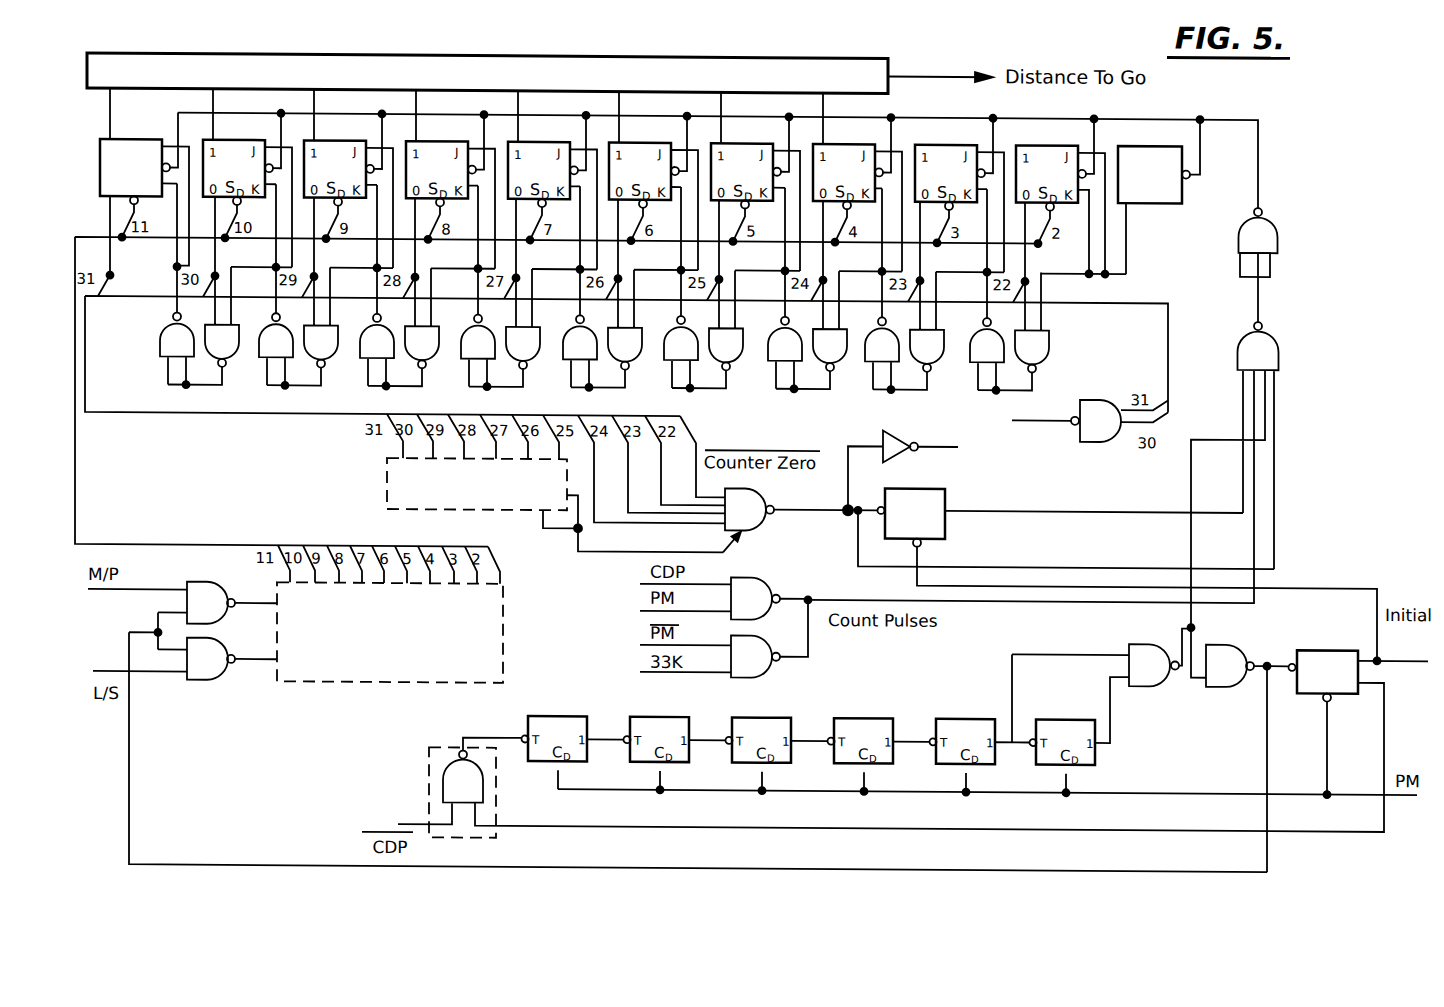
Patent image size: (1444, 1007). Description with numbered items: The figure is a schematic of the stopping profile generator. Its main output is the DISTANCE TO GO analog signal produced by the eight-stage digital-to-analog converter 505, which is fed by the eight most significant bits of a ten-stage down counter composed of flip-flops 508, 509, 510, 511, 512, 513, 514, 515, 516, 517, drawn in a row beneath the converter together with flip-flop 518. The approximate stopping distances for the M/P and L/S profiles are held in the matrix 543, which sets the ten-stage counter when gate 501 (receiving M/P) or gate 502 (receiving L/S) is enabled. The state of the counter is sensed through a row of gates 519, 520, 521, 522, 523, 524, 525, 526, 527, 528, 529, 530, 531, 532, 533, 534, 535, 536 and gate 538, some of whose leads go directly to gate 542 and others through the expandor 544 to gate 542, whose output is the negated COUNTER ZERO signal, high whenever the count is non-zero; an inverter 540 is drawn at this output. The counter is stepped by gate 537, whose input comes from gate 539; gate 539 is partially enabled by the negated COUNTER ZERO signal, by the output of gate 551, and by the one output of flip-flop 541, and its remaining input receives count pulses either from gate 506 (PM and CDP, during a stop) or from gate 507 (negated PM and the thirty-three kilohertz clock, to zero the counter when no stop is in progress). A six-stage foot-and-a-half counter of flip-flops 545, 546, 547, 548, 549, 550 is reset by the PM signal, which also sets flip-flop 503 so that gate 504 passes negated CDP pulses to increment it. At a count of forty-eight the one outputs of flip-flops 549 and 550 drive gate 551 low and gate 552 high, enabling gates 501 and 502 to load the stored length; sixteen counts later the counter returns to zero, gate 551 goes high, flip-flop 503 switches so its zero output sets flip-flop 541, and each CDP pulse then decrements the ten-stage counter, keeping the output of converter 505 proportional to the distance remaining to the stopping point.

The gate 501 is at (182, 602).
The gate 502 is at (185, 658).
The flip-flop 503 is at (1359, 723).
The gate 504 is at (891, 760).
The digital-to-analog converter 505 is at (487, 73).
The gate 506 is at (726, 598).
The gate 507 is at (724, 638).
The flip-flop 508 is at (143, 204).
The flip-flop 509 is at (247, 188).
The flip-flop 510 is at (348, 189).
The flip-flop 511 is at (450, 190).
The flip-flop 512 is at (552, 190).
The flip-flop 513 is at (653, 191).
The flip-flop 514 is at (755, 192).
The flip-flop 515 is at (857, 192).
The flip-flop 516 is at (959, 193).
The flip-flop 517 is at (1062, 196).
The flip-flop 518 is at (1159, 197).
The gate 519 is at (177, 285).
The gate 520 is at (203, 290).
The gate 521 is at (276, 286).
The gate 522 is at (302, 291).
The gate 523 is at (377, 287).
The gate 524 is at (403, 292).
The gate 525 is at (478, 288).
The gate 526 is at (504, 293).
The gate 527 is at (580, 288).
The gate 528 is at (606, 293).
The gate 529 is at (681, 289).
The gate 530 is at (707, 294).
The gate 531 is at (785, 290).
The gate 532 is at (811, 295).
The gate 533 is at (882, 290).
The gate 534 is at (908, 295).
The gate 535 is at (987, 291).
The gate 536 is at (1013, 296).
The gate 537 is at (1258, 265).
The gate 538 is at (1090, 420).
The gate 539 is at (1233, 500).
The inverter 540 is at (893, 434).
The flip-flop 541 is at (1128, 574).
The gate 542 is at (801, 509).
The matrix 543 is at (390, 632).
The expandor 544 is at (555, 505).
The flip-flop 545 is at (573, 753).
The flip-flop 546 is at (675, 755).
The flip-flop 547 is at (777, 755).
The flip-flop 548 is at (879, 756).
The flip-flop 549 is at (980, 757).
The flip-flop 550 is at (1070, 725).
The gate 551 is at (1101, 656).
The gate 552 is at (1247, 759).